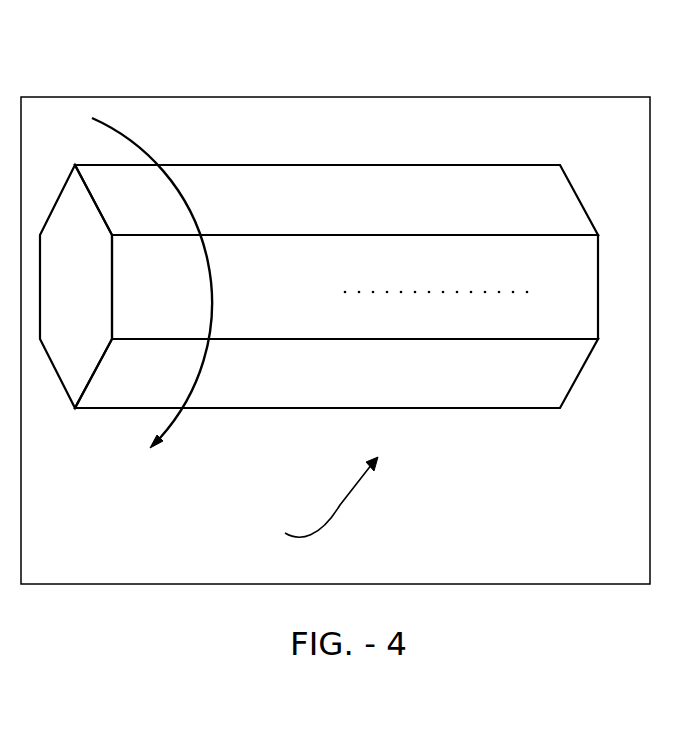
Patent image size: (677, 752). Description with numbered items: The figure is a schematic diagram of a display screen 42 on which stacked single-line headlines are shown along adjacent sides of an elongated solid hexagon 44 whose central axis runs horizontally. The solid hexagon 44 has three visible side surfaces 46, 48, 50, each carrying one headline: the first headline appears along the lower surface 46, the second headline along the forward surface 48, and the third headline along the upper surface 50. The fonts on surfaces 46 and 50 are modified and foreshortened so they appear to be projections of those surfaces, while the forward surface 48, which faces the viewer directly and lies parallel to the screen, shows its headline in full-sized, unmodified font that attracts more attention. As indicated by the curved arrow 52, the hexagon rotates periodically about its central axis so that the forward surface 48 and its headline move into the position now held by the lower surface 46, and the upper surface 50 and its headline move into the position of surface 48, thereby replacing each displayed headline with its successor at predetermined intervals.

The display screen 42 is at (52, 584).
The elongated solid hexagon 44 is at (315, 499).
The side surface 46 is at (447, 382).
The forward surface 48 is at (563, 317).
The side surface 50 is at (422, 190).
The curved arrow 52 is at (182, 432).